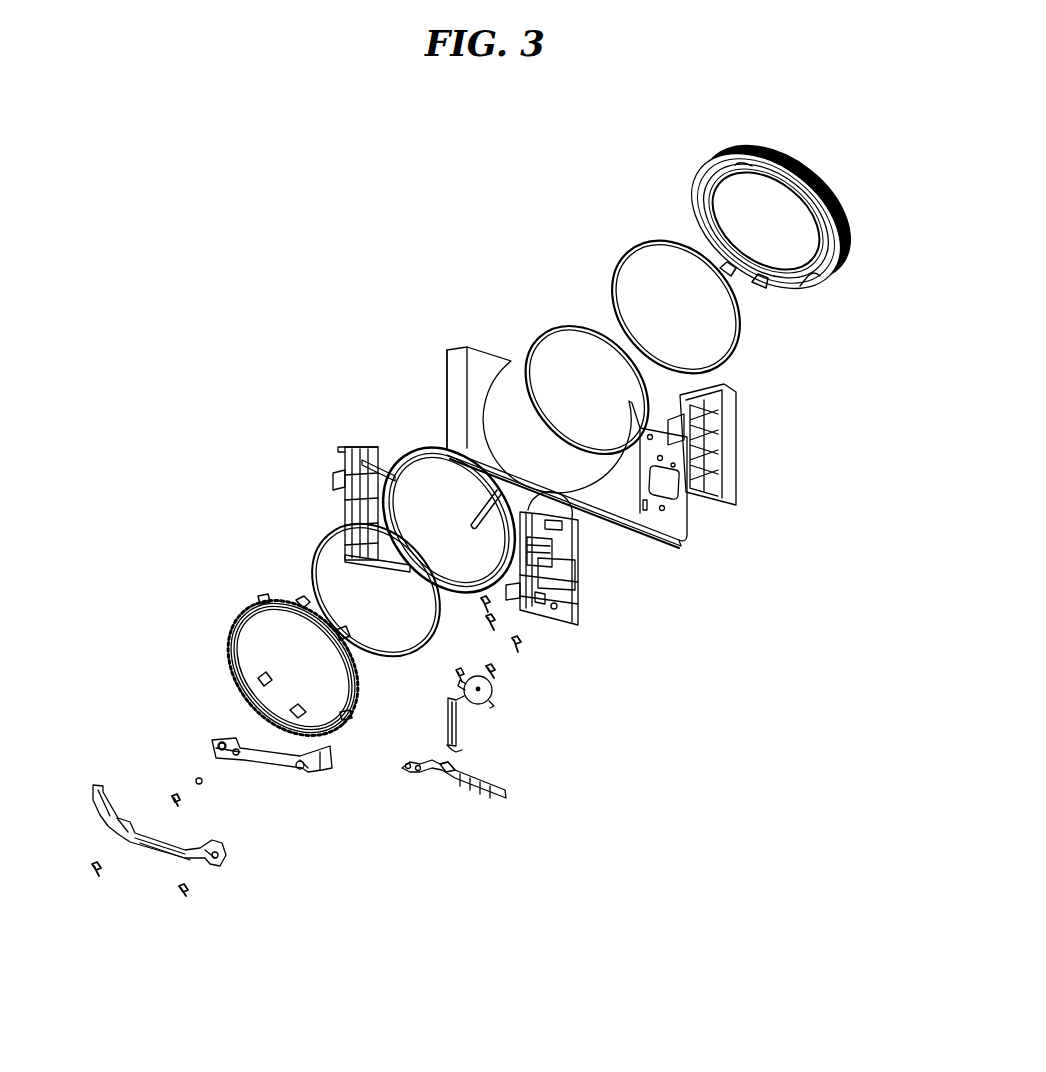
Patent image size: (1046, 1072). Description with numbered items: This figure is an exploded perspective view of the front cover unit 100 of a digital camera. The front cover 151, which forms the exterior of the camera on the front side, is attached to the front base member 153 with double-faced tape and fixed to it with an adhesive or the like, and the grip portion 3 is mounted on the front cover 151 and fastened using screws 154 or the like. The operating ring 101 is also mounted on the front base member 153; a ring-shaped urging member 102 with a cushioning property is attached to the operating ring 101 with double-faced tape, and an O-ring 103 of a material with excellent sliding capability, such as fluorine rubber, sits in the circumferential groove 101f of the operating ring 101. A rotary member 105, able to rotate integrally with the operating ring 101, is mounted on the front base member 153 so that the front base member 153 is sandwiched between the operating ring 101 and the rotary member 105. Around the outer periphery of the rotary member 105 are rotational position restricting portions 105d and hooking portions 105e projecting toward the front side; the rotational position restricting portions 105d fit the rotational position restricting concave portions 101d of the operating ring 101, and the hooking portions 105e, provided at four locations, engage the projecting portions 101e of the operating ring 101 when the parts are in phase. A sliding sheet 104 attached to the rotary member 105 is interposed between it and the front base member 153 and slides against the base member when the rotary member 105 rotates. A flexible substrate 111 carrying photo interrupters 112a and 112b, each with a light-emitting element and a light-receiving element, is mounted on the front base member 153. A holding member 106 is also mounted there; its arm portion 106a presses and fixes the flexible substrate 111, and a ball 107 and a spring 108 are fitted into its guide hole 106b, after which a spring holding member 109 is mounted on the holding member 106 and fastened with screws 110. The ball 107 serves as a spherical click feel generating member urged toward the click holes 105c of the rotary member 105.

The front cover unit 100 is at (316, 386).
The operating ring 101 is at (714, 226).
The rotational position restricting concave portion 101d is at (766, 288).
The projecting portion 101e is at (724, 270).
The circumferential groove 101f is at (752, 168).
The urging member 102 is at (619, 280).
The O-ring 103 is at (540, 344).
The sliding sheet 104 is at (316, 545).
The rotary member 105 is at (236, 614).
The click hole 105c is at (236, 650).
The rotational position restricting portion 105d is at (300, 600).
The hooking portion 105e is at (260, 680).
The holding member 106 is at (250, 746).
The arm portion 106a is at (302, 768).
The guide hole 106b is at (222, 752).
The ball 107 is at (196, 781).
The spring 108 is at (180, 804).
The spring holding member 109 is at (222, 854).
The screw 110 is at (99, 878).
The flexible substrate 111 is at (456, 756).
The photo interrupter 112a is at (404, 772).
The photo interrupter 112b is at (418, 772).
The front cover 151 is at (628, 488).
The front base member 153 is at (584, 600).
The screw 154 is at (495, 672).
The grip portion 3 is at (738, 460).